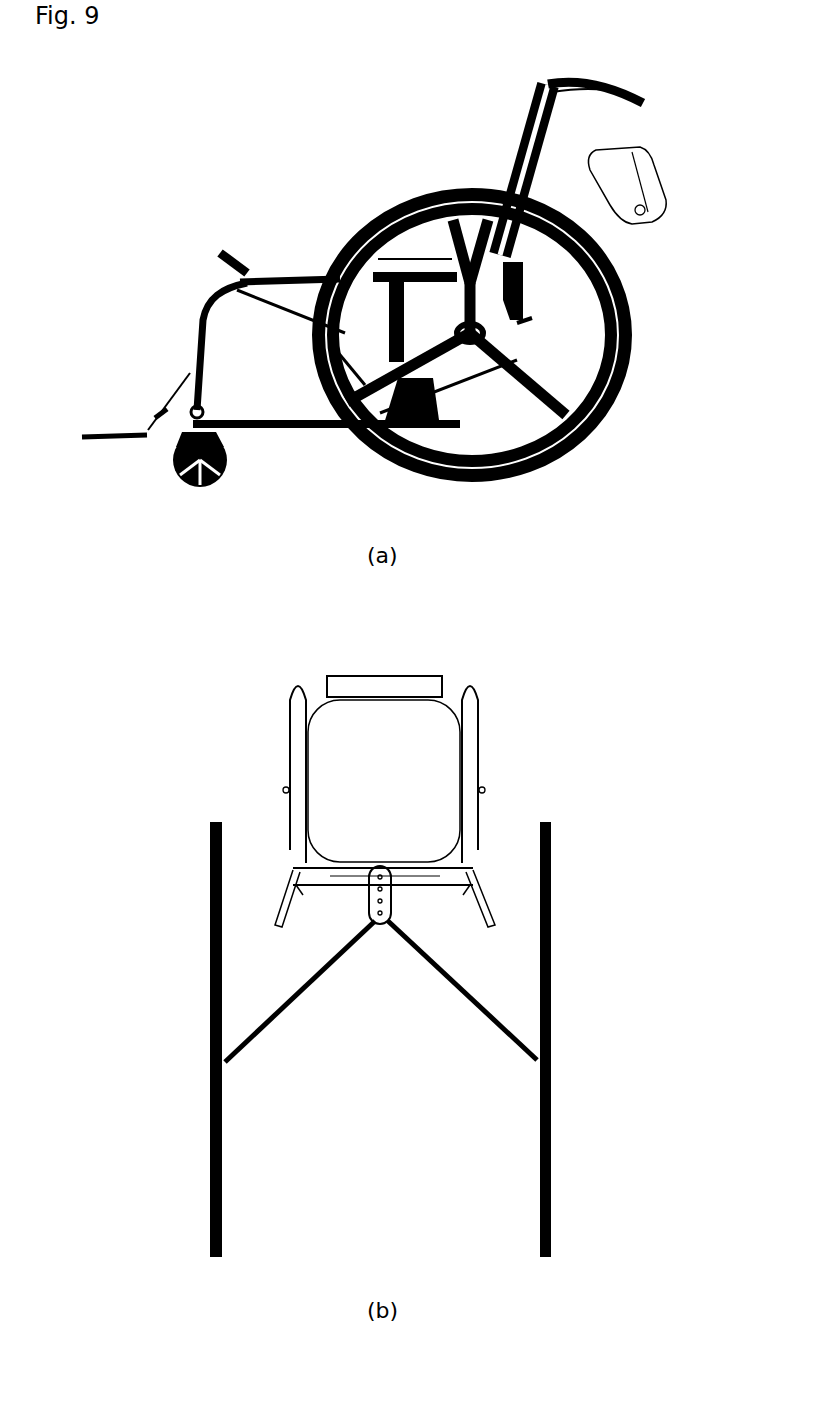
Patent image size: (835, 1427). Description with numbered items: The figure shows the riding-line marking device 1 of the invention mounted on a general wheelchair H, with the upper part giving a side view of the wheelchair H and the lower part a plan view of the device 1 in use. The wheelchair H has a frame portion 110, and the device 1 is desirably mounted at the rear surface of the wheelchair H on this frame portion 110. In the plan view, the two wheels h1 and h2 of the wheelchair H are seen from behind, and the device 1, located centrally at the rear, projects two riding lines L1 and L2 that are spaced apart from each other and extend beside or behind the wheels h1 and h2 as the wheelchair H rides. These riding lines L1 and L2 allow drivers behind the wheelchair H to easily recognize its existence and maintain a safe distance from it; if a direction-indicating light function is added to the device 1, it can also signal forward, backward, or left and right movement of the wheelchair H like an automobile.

The wheelchair H is at (396, 499).
The device 1 is at (663, 181).
The frame portion 110 is at (557, 113).
The wheel h1 is at (628, 380).
The wheel h2 is at (260, 774).
The riding line L1 is at (210, 1030).
The riding line L2 is at (551, 1045).